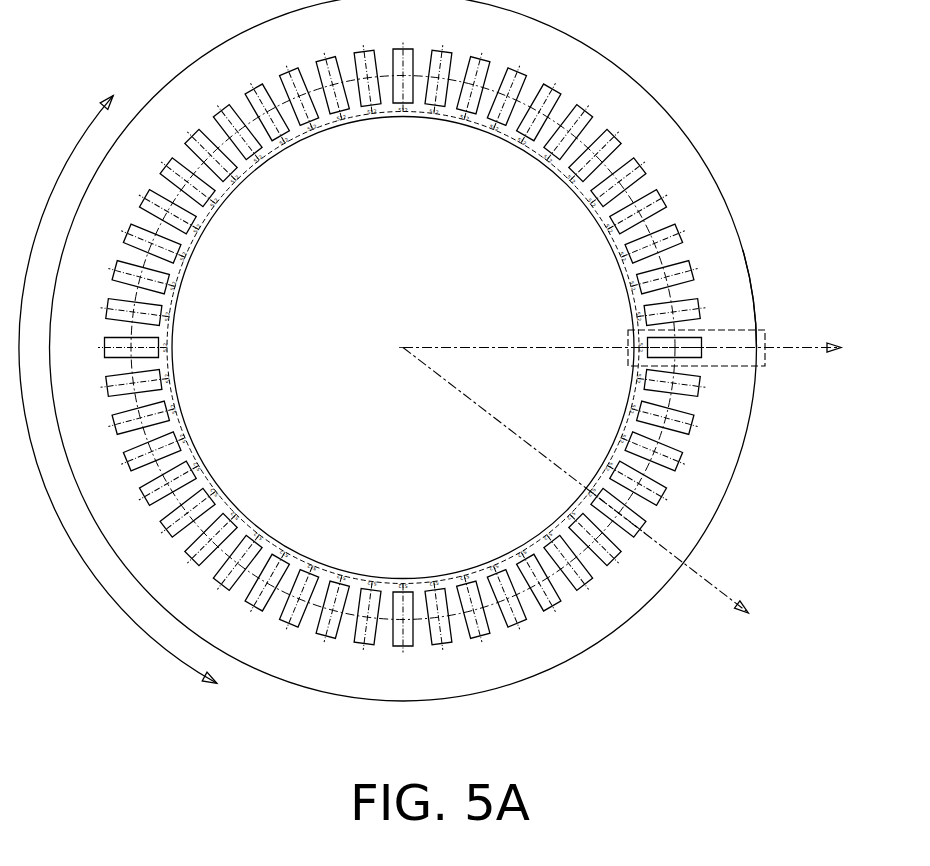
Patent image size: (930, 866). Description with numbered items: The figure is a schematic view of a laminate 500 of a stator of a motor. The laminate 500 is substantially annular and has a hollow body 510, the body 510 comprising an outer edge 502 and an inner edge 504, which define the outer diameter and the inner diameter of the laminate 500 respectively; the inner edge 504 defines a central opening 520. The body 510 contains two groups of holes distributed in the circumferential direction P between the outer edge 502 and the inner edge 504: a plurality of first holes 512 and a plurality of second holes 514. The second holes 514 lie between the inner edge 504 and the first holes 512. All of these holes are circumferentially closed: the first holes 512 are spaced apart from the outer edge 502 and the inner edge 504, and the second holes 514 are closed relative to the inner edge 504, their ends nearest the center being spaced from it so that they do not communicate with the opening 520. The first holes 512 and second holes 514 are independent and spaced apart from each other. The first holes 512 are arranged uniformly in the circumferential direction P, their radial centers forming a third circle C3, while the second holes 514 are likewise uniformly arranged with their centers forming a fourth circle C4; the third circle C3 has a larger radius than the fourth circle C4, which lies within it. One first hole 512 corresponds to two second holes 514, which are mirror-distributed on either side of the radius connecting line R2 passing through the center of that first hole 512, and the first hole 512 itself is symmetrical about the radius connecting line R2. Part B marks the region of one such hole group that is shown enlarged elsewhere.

The laminate 500 is at (627, 64).
The outer edge 502 is at (742, 247).
The inner edge 504 is at (612, 240).
The body 510 is at (684, 160).
The first holes 512 is at (690, 347).
The second holes 514 is at (640, 347).
The opening 520 is at (392, 392).
The part B is at (712, 367).
The circumferential direction P is at (118, 390).
The radius connecting line R2 is at (796, 347).
The third circle C3 is at (256, 118).
The fourth circle C4 is at (321, 122).